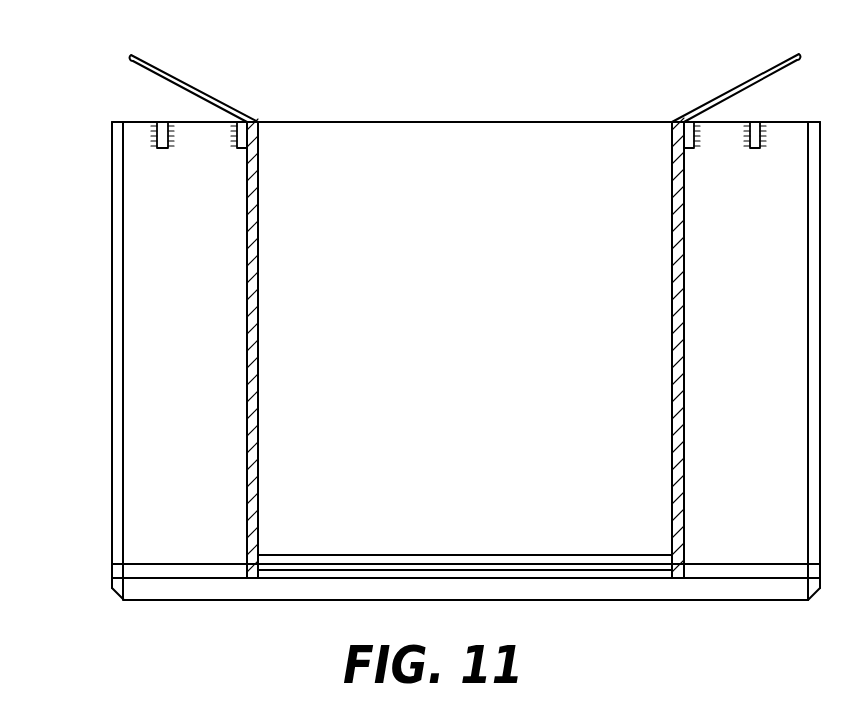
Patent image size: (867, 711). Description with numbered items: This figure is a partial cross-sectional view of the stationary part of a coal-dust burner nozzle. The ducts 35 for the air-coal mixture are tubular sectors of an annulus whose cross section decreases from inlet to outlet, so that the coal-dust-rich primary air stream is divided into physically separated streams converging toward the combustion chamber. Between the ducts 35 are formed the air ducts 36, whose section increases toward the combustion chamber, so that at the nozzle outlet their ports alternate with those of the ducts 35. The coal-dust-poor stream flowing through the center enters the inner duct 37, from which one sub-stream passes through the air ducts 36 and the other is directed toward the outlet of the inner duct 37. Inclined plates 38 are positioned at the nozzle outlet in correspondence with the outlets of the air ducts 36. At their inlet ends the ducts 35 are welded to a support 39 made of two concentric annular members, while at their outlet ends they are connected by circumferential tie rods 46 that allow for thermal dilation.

The ducts 35 is at (153, 245).
The air ducts 36 is at (213, 375).
The inner duct 37 is at (385, 453).
The inclined plates 38 is at (184, 84).
The support 39 is at (118, 583).
The circumferential tie rods 46 is at (160, 137).